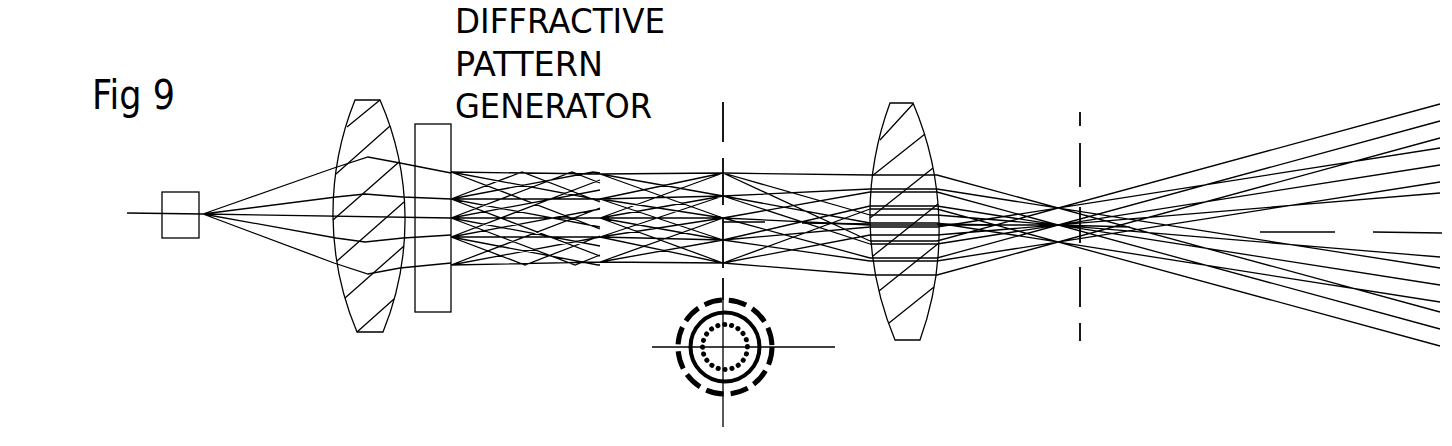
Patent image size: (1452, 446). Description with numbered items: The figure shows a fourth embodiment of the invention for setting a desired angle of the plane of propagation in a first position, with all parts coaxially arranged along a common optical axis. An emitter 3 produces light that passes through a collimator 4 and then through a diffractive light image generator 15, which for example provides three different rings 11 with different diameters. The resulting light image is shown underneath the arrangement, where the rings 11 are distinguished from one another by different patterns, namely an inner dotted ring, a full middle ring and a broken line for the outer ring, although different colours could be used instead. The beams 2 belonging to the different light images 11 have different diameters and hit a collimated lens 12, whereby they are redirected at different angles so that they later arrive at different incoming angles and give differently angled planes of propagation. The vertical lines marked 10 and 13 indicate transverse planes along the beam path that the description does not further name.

The beams 2 is at (284, 181).
The emitter 3 is at (181, 192).
The collimator 4 is at (368, 100).
The intermediate image plane 10 is at (721, 101).
The rings 11 is at (681, 338).
The collimated lens 12 is at (903, 103).
The image plane 13 is at (1079, 111).
The diffractive light image generator 15 is at (432, 124).